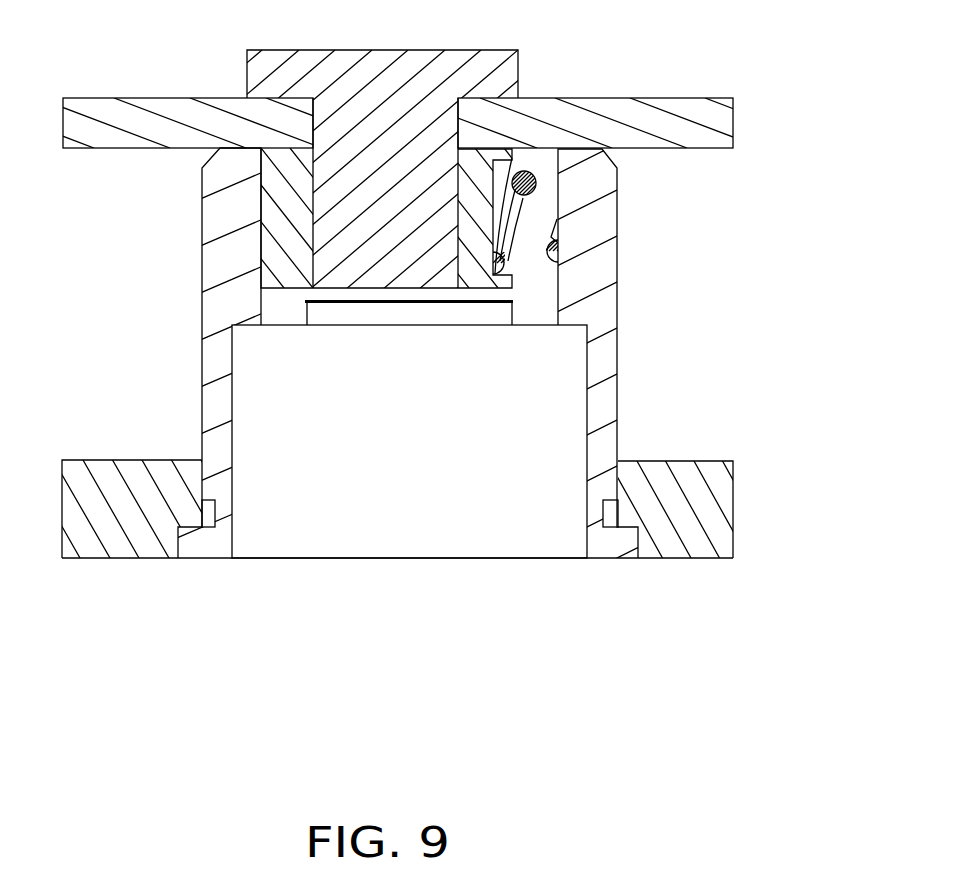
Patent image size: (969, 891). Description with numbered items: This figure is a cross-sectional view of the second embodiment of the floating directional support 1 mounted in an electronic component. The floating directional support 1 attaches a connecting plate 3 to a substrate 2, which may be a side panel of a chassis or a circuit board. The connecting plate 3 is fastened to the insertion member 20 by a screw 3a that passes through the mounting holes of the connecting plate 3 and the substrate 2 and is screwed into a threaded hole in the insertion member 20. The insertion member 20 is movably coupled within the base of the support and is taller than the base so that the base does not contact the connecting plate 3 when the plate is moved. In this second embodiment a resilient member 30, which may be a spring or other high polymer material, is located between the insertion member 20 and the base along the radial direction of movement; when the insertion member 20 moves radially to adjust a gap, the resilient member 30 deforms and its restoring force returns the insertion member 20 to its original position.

The floating directional support 1 is at (607, 348).
The substrate 2 is at (663, 478).
The connecting plate 3 is at (627, 113).
The screw 3a is at (416, 67).
The insertion member 20 is at (477, 237).
The resilient member 30 is at (540, 185).